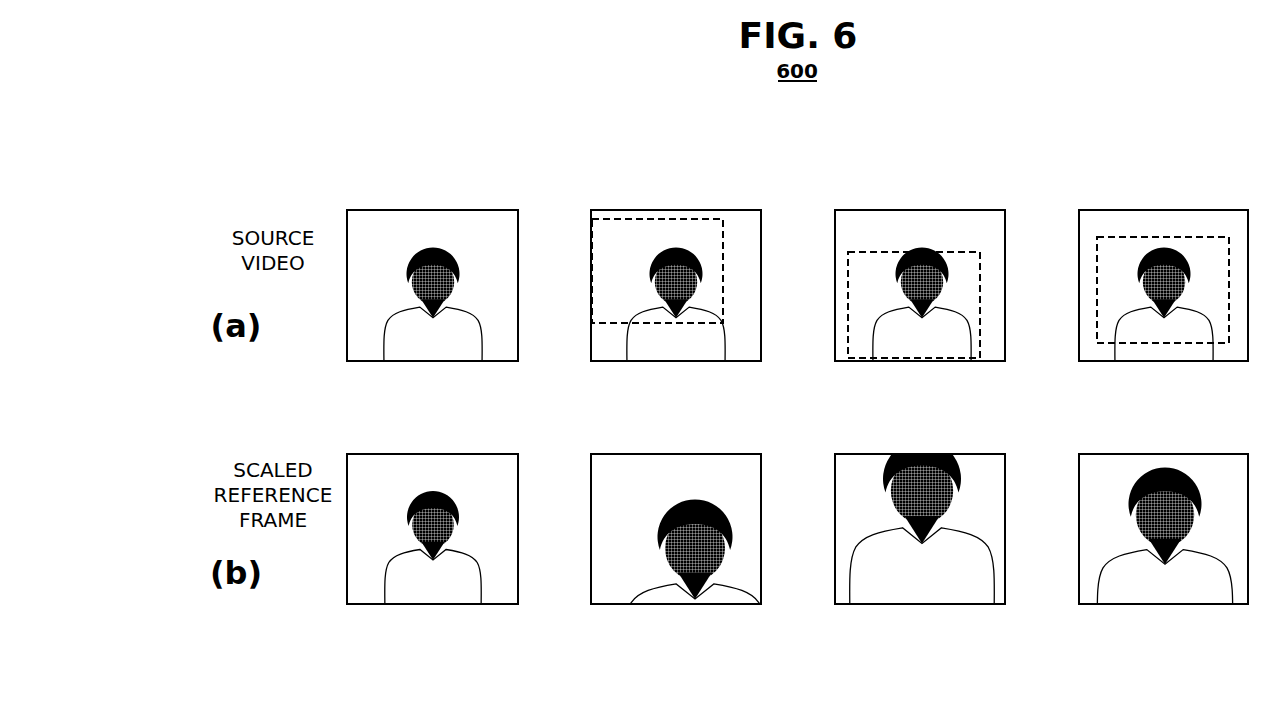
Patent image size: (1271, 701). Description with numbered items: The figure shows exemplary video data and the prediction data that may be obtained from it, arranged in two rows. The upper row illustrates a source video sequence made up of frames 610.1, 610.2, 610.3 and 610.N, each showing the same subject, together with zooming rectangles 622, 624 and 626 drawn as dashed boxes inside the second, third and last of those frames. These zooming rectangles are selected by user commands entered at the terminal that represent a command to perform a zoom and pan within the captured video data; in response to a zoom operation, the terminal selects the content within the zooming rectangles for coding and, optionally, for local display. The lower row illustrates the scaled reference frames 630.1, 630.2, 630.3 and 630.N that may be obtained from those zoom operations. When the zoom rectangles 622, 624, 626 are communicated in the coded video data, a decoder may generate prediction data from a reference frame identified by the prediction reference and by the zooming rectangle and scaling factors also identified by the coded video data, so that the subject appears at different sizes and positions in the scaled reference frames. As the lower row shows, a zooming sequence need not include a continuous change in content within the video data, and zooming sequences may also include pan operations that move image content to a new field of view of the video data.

The source video frame 610.1 is at (432, 259).
The source video frame 610.2 is at (676, 259).
The source video frame 610.3 is at (920, 259).
The source video frame 610.N is at (1163, 259).
The zooming rectangle 622 is at (657, 237).
The zooming rectangle 624 is at (914, 271).
The zooming rectangle 626 is at (1163, 257).
The scaled reference frame 630.1 is at (432, 501).
The scaled reference frame 630.2 is at (678, 531).
The scaled reference frame 630.3 is at (920, 505).
The scaled reference frame 630.N is at (1163, 513).